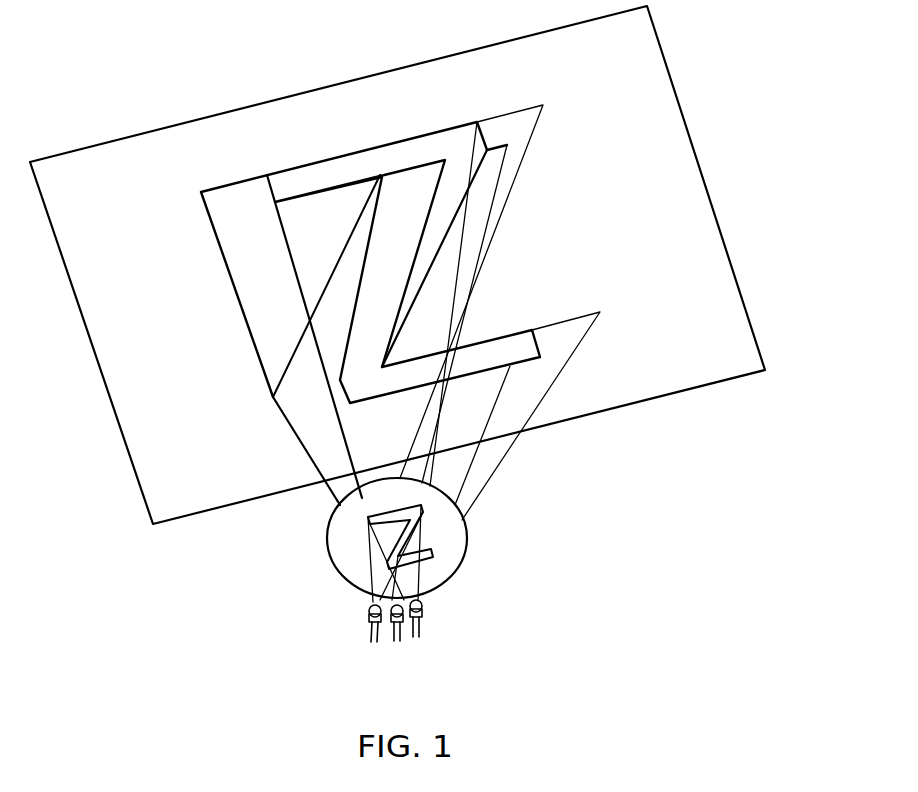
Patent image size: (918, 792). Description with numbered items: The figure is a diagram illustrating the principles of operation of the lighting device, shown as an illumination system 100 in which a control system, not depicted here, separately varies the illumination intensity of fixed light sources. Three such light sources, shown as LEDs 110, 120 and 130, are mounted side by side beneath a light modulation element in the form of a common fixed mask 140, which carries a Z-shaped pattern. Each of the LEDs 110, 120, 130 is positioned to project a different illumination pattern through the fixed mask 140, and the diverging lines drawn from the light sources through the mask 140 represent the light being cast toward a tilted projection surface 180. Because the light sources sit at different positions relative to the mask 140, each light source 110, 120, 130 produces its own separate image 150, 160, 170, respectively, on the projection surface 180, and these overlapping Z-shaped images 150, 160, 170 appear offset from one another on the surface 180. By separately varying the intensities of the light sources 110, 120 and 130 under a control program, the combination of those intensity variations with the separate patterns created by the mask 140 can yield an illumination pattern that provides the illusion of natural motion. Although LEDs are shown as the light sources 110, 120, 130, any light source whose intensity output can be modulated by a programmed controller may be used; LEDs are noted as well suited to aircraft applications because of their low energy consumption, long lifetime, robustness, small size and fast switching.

The display device 100 is at (268, 636).
The LED 110 is at (373, 630).
The LED 120 is at (402, 632).
The LED 130 is at (422, 604).
The fixed mask 140 is at (467, 541).
The image 150 is at (553, 370).
The image 160 is at (358, 158).
The image 170 is at (242, 190).
The projection surface 180 is at (697, 158).